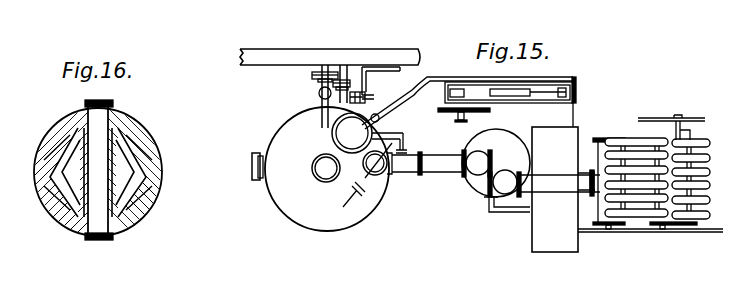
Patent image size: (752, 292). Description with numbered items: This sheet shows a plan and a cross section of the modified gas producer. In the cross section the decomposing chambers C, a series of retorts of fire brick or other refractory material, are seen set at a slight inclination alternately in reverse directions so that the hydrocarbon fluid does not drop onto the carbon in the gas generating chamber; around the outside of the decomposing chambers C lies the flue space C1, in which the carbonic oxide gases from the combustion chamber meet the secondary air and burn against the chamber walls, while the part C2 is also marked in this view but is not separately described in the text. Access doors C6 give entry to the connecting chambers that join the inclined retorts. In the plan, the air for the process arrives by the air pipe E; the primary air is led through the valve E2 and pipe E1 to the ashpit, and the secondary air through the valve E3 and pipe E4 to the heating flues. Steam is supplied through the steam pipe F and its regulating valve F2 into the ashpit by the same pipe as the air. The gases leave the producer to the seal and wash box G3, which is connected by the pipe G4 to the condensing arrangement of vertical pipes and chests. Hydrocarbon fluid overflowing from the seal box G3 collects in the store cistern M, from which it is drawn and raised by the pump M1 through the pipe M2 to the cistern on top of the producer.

In FIG. 16, the decomposing chamber C is at (99, 170).
In FIG. 16, the flue space C1 is at (78, 158).
In FIG. 16, the filling C2 is at (147, 157).
In FIG. 15, the access door C6 is at (252, 172).
In FIG. 15, the air pipe E is at (330, 57).
In FIG. 15, the primary air pipe E1 is at (345, 65).
In FIG. 15, the primary air valve E2 is at (340, 72).
In FIG. 15, the secondary air valve E3 is at (312, 76).
In FIG. 15, the secondary air pipe E4 is at (308, 96).
In FIG. 15, the steam pipe F is at (400, 68).
In FIG. 15, the steam regulating valve F2 is at (366, 97).
In FIG. 15, the store cistern M is at (533, 160).
In FIG. 15, the pump M1 is at (577, 90).
In FIG. 15, the pump delivery pipe M2 is at (467, 95).
In FIG. 15, the seal and wash box G3 is at (496, 170).
In FIG. 15, the connecting pipe G4 is at (496, 174).